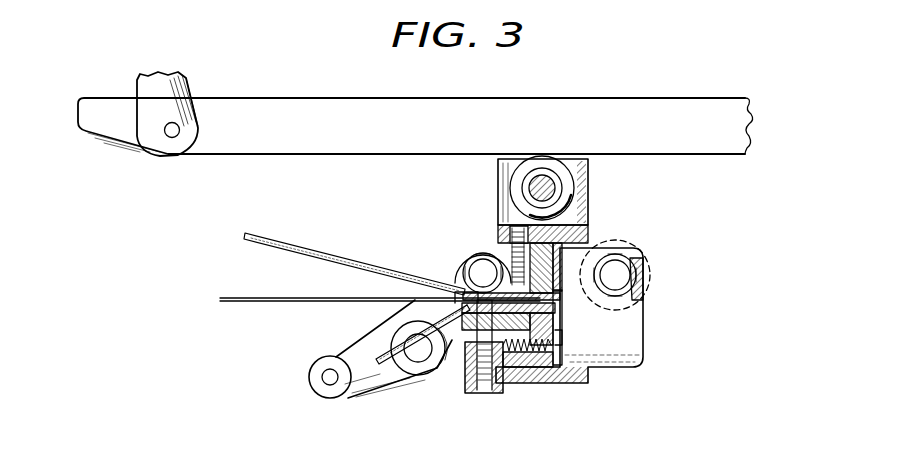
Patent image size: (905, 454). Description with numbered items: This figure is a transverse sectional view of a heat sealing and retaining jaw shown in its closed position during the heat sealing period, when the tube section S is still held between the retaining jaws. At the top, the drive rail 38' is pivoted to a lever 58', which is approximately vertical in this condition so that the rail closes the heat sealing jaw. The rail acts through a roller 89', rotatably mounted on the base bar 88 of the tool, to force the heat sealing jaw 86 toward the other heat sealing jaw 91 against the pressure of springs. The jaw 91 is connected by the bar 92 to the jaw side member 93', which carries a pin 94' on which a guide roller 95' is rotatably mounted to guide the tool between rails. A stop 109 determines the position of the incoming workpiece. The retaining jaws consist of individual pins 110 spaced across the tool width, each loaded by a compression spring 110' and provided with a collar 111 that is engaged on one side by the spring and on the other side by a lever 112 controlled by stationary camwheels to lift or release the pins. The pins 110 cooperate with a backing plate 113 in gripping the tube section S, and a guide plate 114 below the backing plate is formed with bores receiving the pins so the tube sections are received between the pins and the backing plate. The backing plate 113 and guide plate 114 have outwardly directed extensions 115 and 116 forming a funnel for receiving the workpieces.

The drive rail 38' is at (433, 126).
The lever 58' is at (184, 107).
The heat sealing jaw 86 is at (578, 220).
The base bar 88 is at (590, 236).
The roller 89' is at (556, 164).
The heat sealing jaw 91 is at (530, 383).
The bar 92 is at (575, 383).
The jaw side member 93' is at (596, 315).
The pin 94' is at (566, 244).
The guide roller 95' is at (582, 228).
The stop 109 is at (562, 312).
The pin 110 is at (491, 383).
The compression spring 110' is at (457, 360).
The collar 111 is at (430, 372).
The lever 112 is at (398, 332).
The backing plate 113 is at (462, 310).
The guide plate 114 is at (455, 300).
The extension 115 is at (258, 234).
The extension 116 is at (376, 383).
The tube section S is at (230, 297).